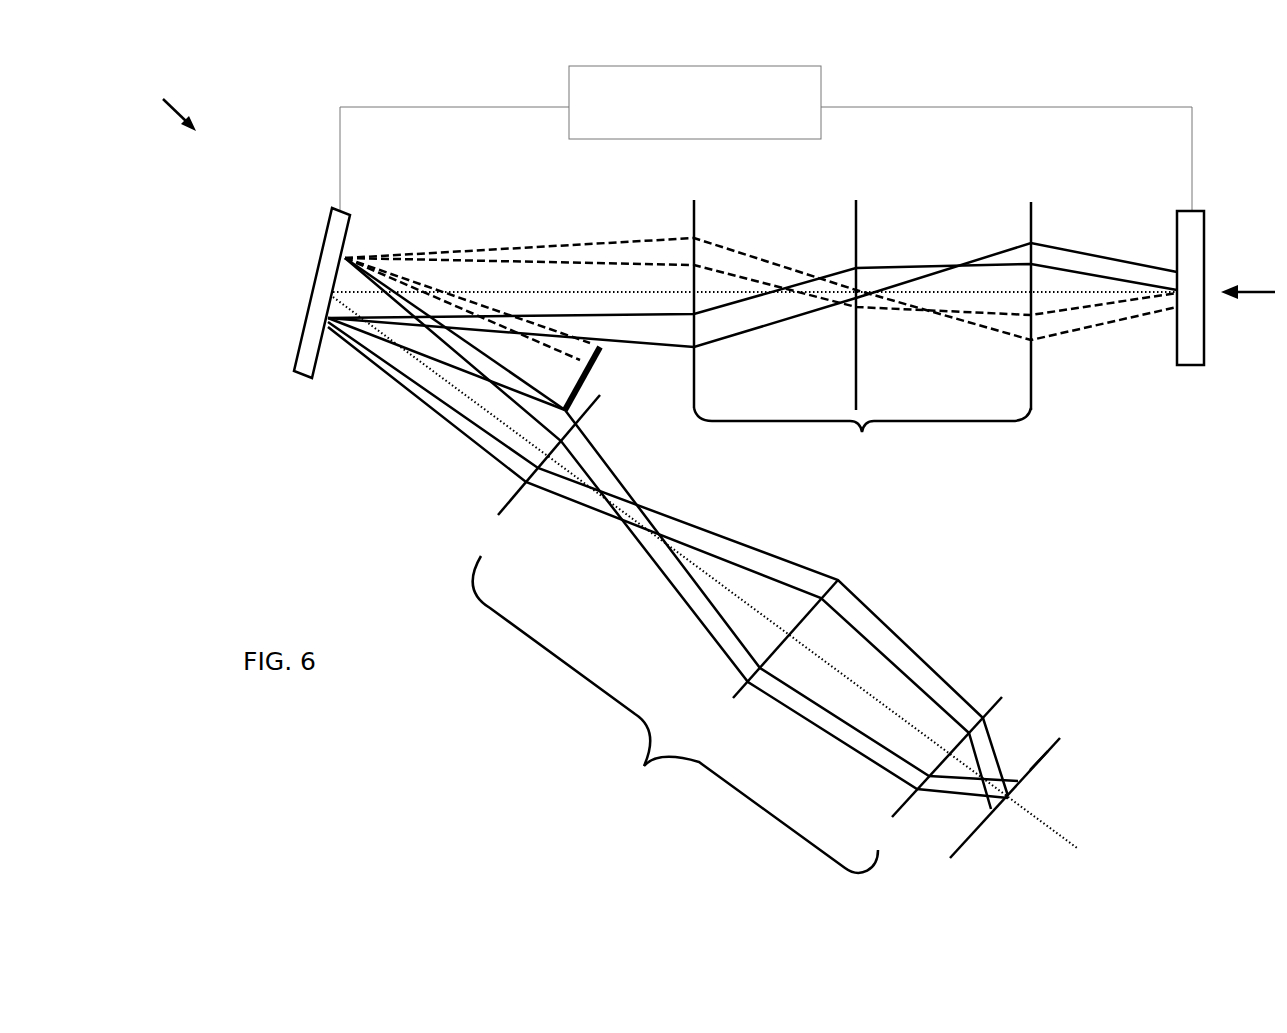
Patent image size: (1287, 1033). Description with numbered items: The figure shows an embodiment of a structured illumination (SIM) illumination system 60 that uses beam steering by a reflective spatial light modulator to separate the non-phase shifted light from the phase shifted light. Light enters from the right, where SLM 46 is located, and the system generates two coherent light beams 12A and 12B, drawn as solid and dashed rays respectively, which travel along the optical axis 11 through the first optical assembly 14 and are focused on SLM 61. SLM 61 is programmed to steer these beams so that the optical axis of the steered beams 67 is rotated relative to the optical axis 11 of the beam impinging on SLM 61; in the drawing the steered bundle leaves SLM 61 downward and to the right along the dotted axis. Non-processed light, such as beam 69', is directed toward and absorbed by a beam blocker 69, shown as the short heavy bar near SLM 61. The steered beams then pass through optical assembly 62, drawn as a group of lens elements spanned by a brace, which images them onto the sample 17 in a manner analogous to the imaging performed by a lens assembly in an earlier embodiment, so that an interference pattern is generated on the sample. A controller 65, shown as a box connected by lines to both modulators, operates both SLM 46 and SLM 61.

The illumination system 60 is at (162, 96).
The controller 65 is at (720, 65).
The SLM 61 is at (300, 344).
The SLM 46 is at (1207, 248).
The optical axis 11 is at (542, 291).
The first optical assembly 14 is at (862, 340).
The coherent light beam 12A is at (1085, 272).
The coherent light beam 12B is at (1122, 313).
The beam blocker 69 is at (604, 392).
The beam 69' is at (515, 358).
The optical assembly 62 is at (737, 634).
The optical axis of the steered beams 67 is at (1027, 810).
The sample 17 is at (1038, 758).